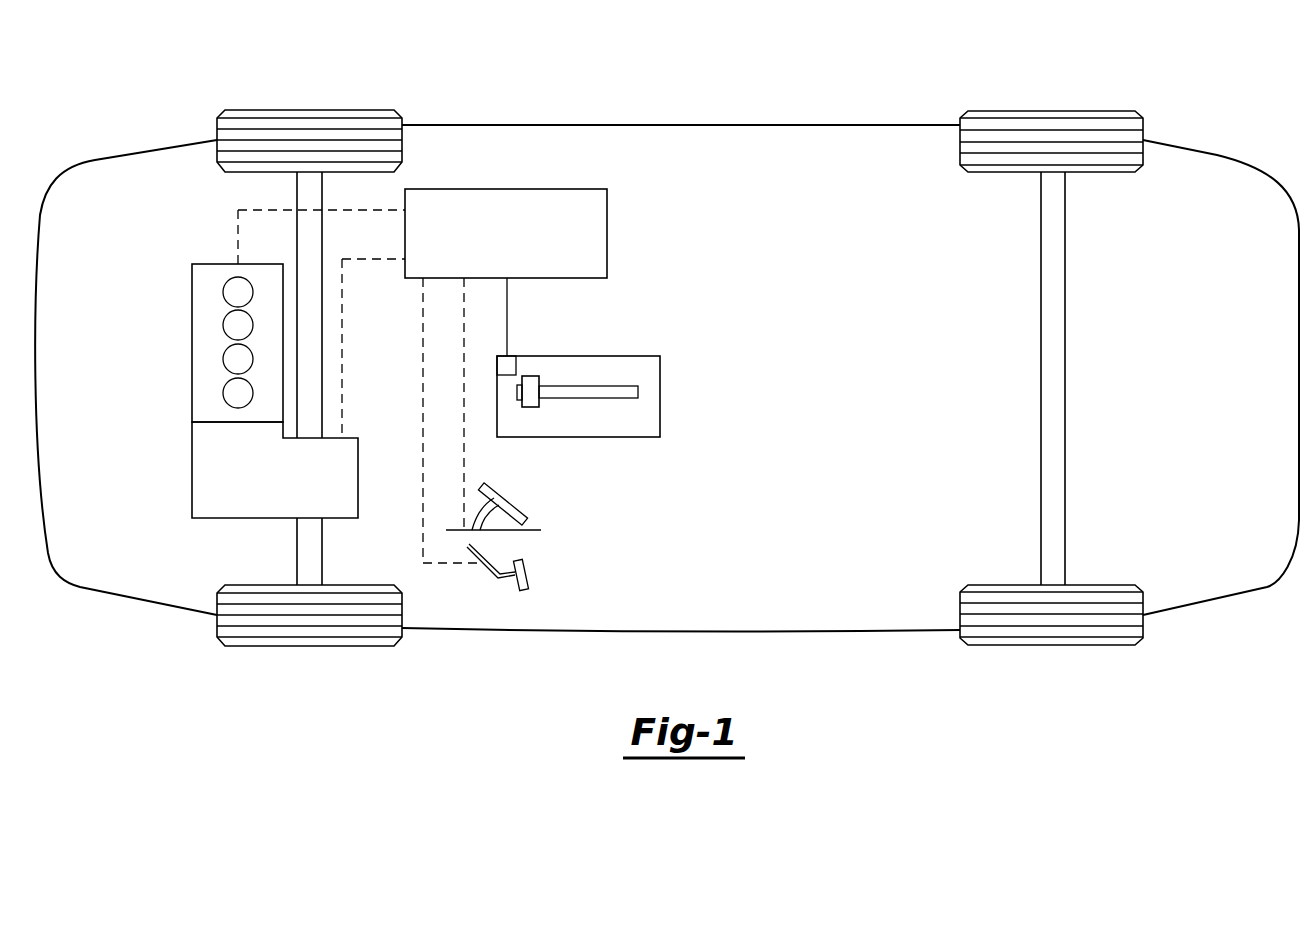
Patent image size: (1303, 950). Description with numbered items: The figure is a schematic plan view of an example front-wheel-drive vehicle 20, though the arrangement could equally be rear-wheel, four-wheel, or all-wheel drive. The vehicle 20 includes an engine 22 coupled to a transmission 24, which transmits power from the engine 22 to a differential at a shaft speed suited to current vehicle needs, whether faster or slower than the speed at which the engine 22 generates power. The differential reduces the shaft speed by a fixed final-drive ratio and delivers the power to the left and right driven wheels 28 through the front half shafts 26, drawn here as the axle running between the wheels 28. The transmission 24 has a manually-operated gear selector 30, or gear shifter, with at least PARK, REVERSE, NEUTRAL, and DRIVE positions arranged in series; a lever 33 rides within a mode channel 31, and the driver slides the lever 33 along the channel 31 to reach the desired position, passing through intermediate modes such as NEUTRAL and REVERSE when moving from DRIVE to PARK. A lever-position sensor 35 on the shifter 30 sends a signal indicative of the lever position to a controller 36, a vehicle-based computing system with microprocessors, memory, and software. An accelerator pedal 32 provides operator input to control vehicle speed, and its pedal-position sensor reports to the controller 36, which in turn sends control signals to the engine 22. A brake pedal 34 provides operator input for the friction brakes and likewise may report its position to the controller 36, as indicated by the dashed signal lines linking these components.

The vehicle 20 is at (681, 54).
The engine 22 is at (192, 323).
The transmission 24 is at (192, 468).
The front half shafts 26 is at (297, 553).
The driven wheels 28 is at (301, 110).
The gear selector 30 is at (602, 369).
The mode channel 31 is at (600, 386).
The accelerator pedal 32 is at (500, 495).
The lever 33 is at (531, 376).
The brake pedal 34 is at (527, 567).
The lever-position sensor 35 is at (497, 366).
The controller 36 is at (607, 233).